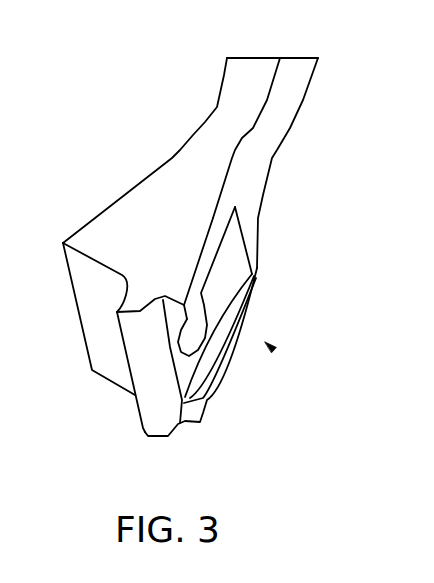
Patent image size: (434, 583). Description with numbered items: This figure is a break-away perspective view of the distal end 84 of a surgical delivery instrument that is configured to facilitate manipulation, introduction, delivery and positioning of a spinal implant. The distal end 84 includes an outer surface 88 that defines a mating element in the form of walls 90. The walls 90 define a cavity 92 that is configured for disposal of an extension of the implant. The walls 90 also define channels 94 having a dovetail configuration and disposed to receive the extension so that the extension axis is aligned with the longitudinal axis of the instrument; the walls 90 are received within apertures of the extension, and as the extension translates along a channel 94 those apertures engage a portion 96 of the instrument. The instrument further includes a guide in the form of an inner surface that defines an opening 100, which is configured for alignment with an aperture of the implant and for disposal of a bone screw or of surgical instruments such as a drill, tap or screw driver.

The opening 100 is at (206, 290).
The distal end 84 is at (253, 201).
The outer surface 88 is at (243, 262).
The portion 96 is at (238, 282).
The cavity 92 is at (270, 347).
The walls 90 is at (157, 308).
The channels 94 is at (183, 403).